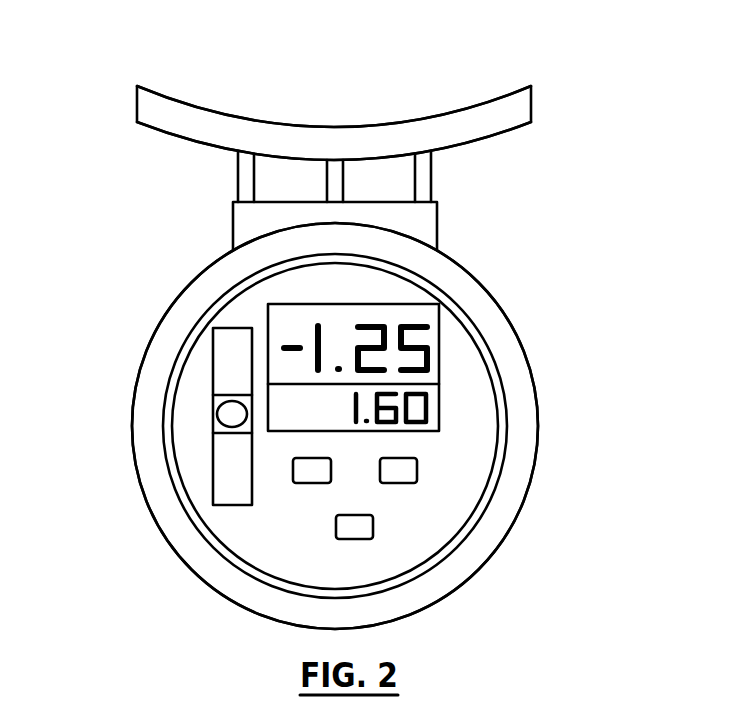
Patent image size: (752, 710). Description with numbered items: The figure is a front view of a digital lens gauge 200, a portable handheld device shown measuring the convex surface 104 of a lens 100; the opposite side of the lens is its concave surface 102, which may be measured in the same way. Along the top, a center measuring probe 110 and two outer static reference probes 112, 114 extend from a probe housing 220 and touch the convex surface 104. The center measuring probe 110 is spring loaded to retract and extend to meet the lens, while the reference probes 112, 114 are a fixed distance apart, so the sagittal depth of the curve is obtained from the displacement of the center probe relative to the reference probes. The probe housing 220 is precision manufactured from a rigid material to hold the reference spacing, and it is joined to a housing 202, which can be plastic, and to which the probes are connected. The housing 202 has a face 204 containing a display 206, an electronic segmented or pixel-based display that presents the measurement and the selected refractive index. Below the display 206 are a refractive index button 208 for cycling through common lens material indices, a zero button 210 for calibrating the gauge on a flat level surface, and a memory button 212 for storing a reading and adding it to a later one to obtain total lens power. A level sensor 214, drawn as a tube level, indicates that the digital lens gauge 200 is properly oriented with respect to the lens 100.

The lens 100 is at (531, 105).
The concave surface 102 is at (205, 110).
The convex surface 104 is at (175, 133).
The center measuring probe 110 is at (343, 181).
The outer static reference probe 112 is at (238, 172).
The outer static reference probe 114 is at (431, 167).
The probe housing 220 is at (233, 232).
The digital lens gauge 200 is at (515, 273).
The housing 202 is at (157, 327).
The face 204 is at (365, 282).
The display 206 is at (439, 353).
The refractive index button 208 is at (417, 466).
The zero button 210 is at (293, 471).
The memory button 212 is at (336, 527).
The level sensor 214 is at (220, 383).